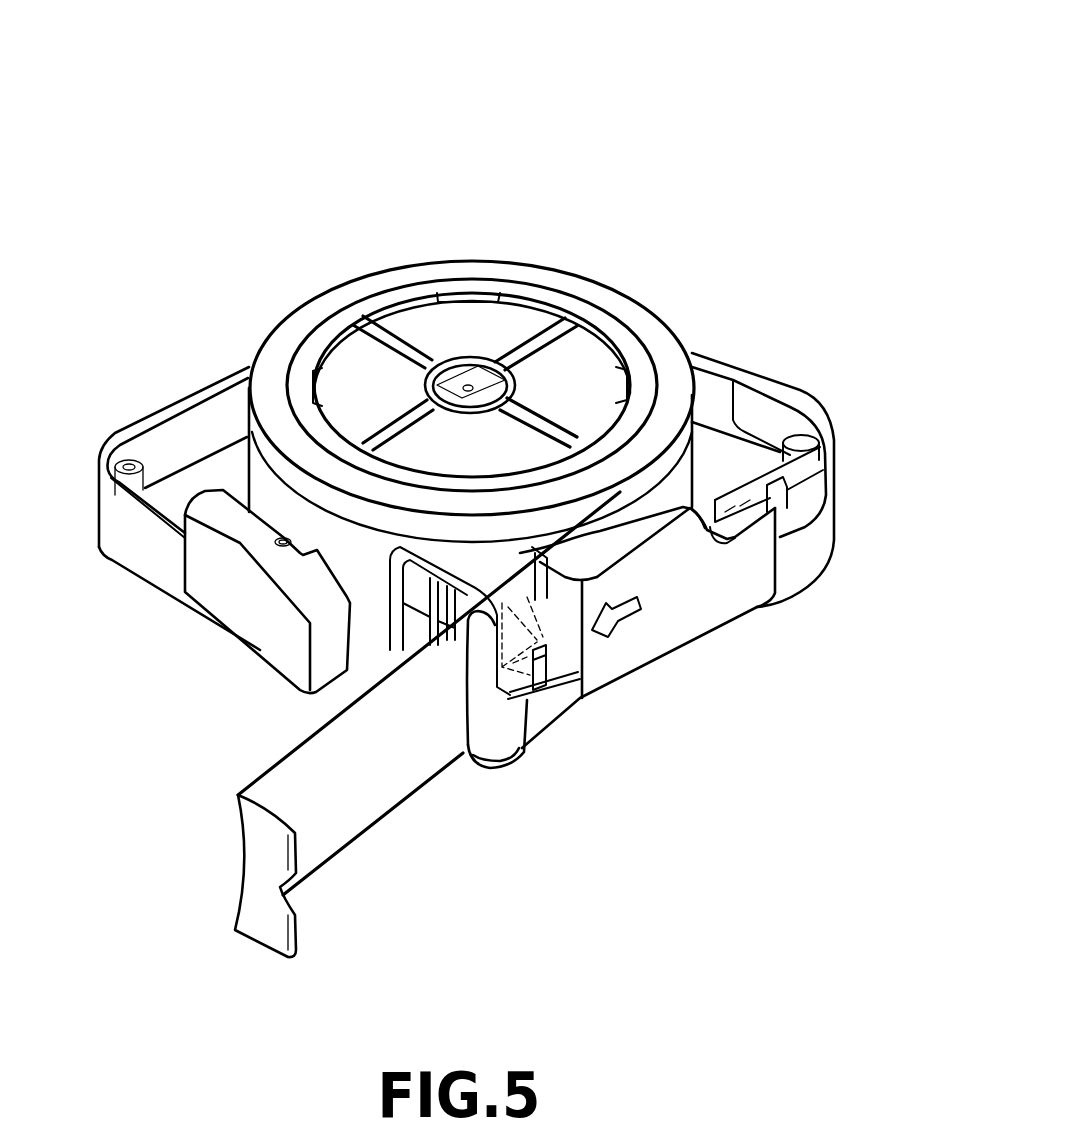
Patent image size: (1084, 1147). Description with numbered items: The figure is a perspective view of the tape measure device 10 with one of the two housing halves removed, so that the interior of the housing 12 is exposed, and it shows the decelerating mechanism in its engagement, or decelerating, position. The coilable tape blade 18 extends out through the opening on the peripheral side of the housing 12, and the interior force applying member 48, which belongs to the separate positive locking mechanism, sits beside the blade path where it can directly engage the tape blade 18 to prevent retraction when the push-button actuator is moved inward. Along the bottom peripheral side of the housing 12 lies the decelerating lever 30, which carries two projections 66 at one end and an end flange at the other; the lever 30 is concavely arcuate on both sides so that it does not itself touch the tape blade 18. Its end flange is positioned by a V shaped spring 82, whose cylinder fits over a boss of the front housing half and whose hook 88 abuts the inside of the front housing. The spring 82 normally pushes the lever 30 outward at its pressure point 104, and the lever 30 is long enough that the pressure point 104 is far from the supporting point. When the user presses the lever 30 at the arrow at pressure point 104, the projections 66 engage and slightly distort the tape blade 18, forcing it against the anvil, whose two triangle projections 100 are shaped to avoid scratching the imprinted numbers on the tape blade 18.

The tape measure device 10 is at (622, 165).
The housing 12 is at (855, 398).
The tape blade 18 is at (342, 815).
The decelerating lever 30 is at (733, 598).
The interior force applying member 48 is at (442, 623).
The projections 66 is at (548, 662).
The V shaped spring 82 is at (812, 478).
The hook 88 is at (741, 385).
The triangle projections 100 is at (529, 690).
The pressure point 104 is at (628, 622).